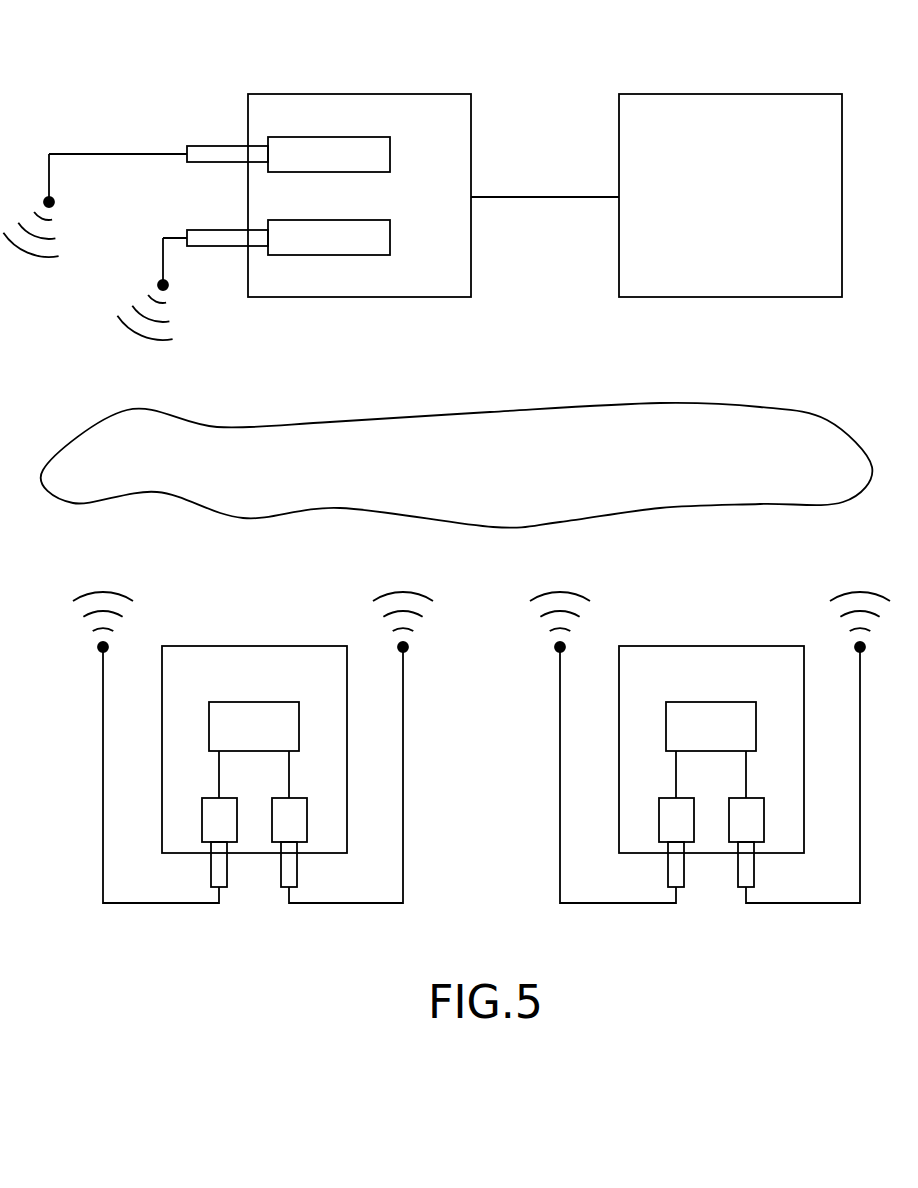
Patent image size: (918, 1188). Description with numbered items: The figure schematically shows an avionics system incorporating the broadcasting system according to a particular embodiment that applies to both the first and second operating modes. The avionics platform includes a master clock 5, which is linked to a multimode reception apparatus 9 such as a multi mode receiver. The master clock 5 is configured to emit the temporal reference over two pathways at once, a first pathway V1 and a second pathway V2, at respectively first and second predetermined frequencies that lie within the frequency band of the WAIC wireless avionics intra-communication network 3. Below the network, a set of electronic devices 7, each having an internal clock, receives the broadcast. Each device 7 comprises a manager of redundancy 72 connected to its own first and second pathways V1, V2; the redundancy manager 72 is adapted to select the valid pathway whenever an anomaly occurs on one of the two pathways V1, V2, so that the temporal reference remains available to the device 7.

The wireless avionics intra-communication network 3 is at (822, 432).
The master clock 5 is at (360, 94).
The multimode reception apparatus 9 is at (736, 94).
The electronic device 7 is at (198, 646).
The manager of redundancy 72 is at (260, 712).
The first pathway V1 is at (218, 146).
The second pathway V2 is at (218, 230).